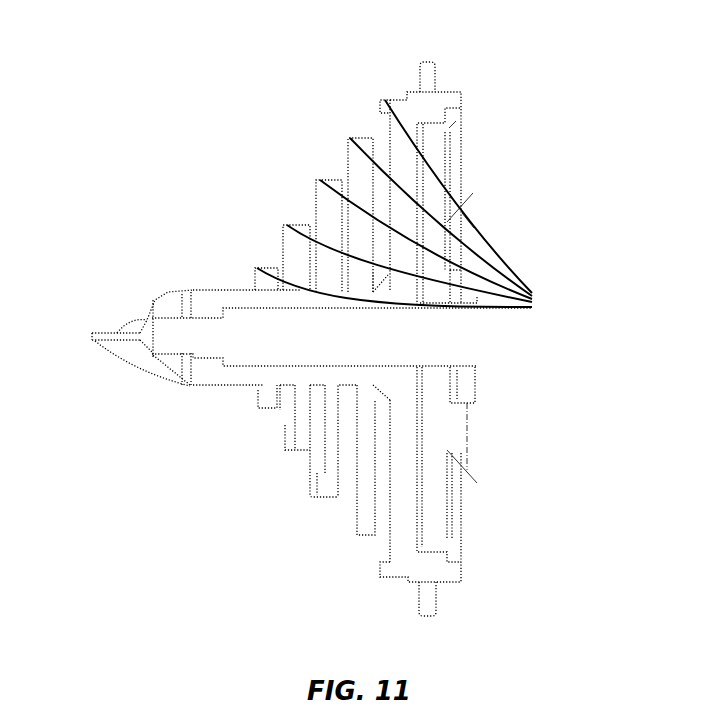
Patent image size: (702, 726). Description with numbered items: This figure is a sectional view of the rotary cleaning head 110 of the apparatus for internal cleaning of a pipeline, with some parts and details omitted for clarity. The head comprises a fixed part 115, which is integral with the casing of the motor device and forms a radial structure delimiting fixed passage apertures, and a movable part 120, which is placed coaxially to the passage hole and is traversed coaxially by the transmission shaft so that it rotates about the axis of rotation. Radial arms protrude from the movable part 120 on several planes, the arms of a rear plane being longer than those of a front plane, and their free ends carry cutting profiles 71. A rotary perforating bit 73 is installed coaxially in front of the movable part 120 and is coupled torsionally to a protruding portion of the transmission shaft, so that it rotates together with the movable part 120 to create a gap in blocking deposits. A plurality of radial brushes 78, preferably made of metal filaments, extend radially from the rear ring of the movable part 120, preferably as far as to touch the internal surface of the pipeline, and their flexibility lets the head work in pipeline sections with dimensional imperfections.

The rotary cleaning head 110 is at (208, 85).
The radial brushes 78 is at (433, 73).
The cutting profiles 71 is at (405, 204).
The rotary perforating bit 73 is at (123, 365).
The fixed part 115 is at (445, 448).
The movable part 120 is at (415, 570).